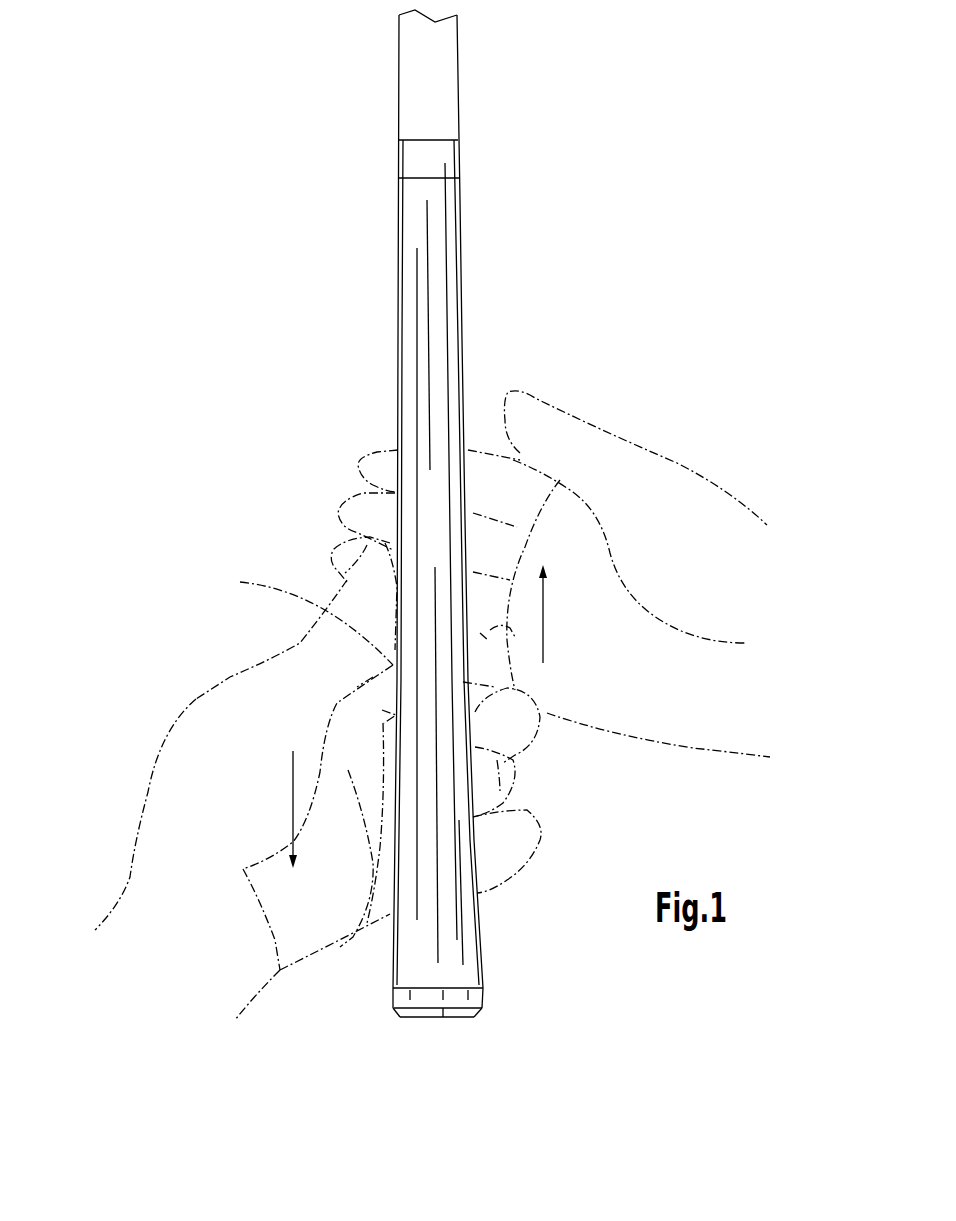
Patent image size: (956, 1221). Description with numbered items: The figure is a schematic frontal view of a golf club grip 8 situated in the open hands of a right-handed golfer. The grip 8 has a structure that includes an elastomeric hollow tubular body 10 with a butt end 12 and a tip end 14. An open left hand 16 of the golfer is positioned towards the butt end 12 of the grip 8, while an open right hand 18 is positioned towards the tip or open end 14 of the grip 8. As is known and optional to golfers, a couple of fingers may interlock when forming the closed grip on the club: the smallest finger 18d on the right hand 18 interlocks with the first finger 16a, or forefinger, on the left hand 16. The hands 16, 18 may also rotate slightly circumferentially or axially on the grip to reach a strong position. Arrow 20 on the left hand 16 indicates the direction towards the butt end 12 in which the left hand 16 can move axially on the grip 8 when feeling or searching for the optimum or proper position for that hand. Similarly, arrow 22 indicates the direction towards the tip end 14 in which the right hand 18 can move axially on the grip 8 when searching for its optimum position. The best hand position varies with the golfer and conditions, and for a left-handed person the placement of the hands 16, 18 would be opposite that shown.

The golf club grip 8 is at (497, 513).
The elastomeric hollow tubular body 10 is at (462, 328).
The butt end 12 is at (483, 998).
The tip end 14 is at (458, 155).
The left hand 16 is at (196, 699).
The first finger 16a is at (294, 616).
The right hand 18 is at (705, 475).
The smallest finger 18d is at (505, 633).
The arrow 20 is at (291, 794).
The arrow 22 is at (543, 620).